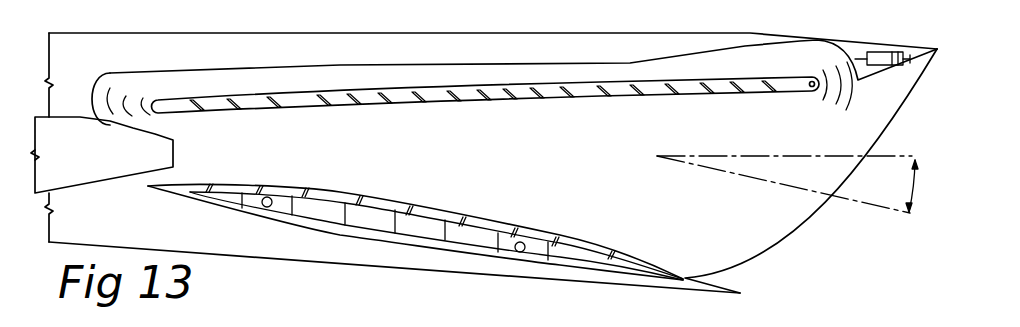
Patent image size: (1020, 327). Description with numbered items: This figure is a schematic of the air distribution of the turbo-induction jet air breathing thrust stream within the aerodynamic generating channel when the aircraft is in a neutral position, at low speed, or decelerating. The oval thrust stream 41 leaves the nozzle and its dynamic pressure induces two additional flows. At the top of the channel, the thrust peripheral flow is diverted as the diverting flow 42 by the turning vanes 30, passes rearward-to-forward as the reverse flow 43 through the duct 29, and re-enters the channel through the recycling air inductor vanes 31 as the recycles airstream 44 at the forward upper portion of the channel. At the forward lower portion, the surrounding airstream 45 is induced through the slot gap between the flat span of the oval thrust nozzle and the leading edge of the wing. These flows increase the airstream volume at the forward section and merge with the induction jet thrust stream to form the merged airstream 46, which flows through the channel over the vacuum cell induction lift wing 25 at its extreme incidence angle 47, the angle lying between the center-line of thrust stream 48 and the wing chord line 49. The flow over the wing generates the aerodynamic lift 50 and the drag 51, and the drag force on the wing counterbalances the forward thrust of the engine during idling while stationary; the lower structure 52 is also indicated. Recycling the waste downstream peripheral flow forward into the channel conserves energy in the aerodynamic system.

The vane airfoil section 25 is at (652, 287).
The duct 29 is at (420, 78).
The turning vanes 30 is at (827, 67).
The recycling air inductor vanes 31 is at (140, 98).
The oval thrust stream 41 is at (258, 148).
The diverting flow 42 is at (815, 110).
The reverse flow 43 is at (363, 80).
The recycles airstream 44 is at (238, 133).
The surrounding airstream 45 is at (217, 163).
The merged airstream 46 is at (375, 152).
The extreme incidence angle 47 is at (916, 182).
The center-line of thrust stream 48 is at (803, 155).
The wing chord line 49 is at (795, 191).
The aerodynamic lift 50 is at (385, 200).
The drag 51 is at (385, 200).
The lower element 52 is at (807, 322).